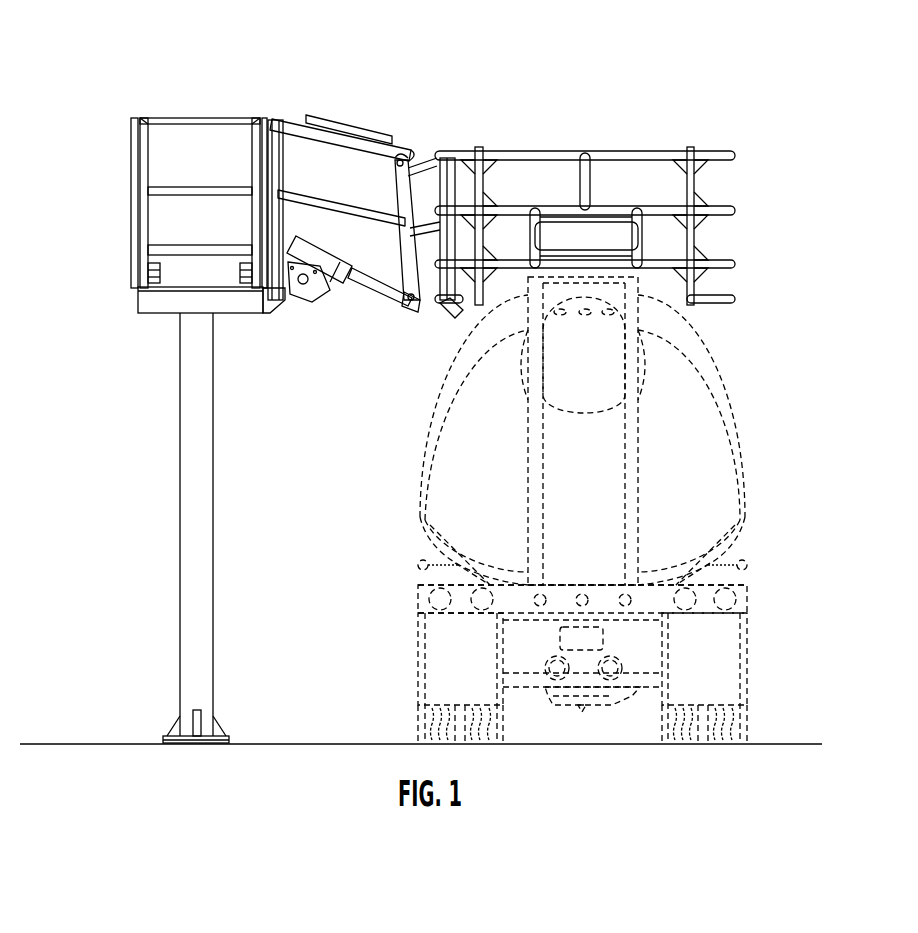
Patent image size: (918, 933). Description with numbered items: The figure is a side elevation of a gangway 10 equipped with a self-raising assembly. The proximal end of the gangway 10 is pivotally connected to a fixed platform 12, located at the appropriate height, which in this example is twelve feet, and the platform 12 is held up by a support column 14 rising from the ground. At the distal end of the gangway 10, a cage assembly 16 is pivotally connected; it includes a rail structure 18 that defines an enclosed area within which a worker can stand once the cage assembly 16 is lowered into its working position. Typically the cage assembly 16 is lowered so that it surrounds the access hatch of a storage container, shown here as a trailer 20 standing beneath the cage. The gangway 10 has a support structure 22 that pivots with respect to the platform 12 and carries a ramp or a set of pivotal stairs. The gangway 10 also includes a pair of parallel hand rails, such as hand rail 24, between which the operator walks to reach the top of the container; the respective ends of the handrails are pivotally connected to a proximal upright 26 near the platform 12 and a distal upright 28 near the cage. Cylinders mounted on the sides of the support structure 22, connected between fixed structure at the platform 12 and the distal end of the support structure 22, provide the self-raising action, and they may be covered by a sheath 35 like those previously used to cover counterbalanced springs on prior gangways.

The gangway 10 is at (300, 58).
The fixed platform 12 is at (143, 303).
The support column 14 is at (186, 568).
The cage assembly 16 is at (778, 214).
The rail structure 18 is at (622, 150).
The trailer 20 is at (430, 472).
The support structure 22 is at (368, 303).
The hand rail 24 is at (400, 130).
The proximal upright 26 is at (318, 120).
The distal upright 28 is at (397, 188).
The sheath 35 is at (347, 282).